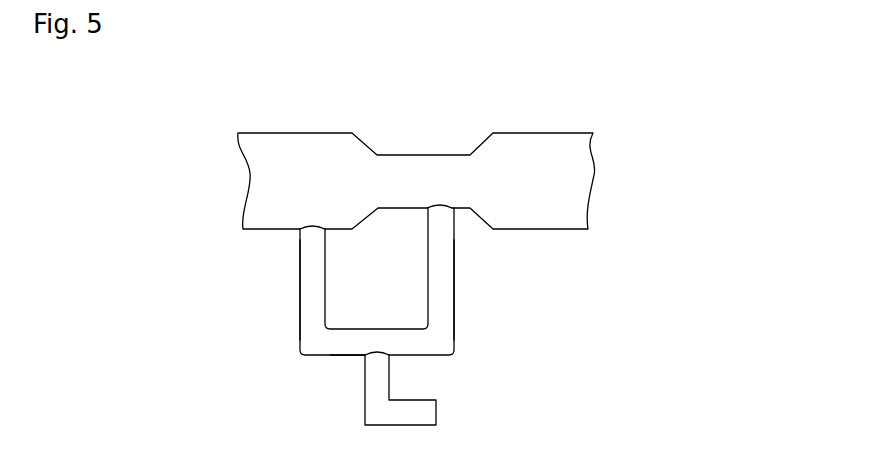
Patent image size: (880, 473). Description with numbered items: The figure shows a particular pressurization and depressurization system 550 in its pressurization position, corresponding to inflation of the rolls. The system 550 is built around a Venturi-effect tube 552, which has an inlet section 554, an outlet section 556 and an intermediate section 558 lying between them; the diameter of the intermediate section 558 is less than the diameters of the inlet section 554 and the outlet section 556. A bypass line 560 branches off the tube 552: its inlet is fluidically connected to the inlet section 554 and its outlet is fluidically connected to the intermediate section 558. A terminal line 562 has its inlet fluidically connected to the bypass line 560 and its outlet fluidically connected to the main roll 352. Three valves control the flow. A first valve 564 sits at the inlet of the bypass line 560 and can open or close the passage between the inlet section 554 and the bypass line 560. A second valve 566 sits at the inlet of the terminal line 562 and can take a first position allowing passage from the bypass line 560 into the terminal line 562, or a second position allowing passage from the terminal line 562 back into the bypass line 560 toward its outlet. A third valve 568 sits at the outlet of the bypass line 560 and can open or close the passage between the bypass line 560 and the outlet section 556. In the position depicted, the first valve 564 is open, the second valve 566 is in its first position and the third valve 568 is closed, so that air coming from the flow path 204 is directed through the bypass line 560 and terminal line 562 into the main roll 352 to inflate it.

The pressurization and depressurization system 550 is at (638, 125).
The Venturi-effect tube 552 is at (240, 113).
The flow path 204 is at (162, 182).
The inlet section 554 is at (300, 162).
The intermediate section 558 is at (420, 178).
The outlet section 556 is at (573, 178).
The bypass line 560 is at (315, 342).
The first valve 564 is at (302, 232).
The third valve 568 is at (440, 214).
The second valve 566 is at (377, 330).
The terminal line 562 is at (375, 408).
The main roll 352 is at (445, 412).